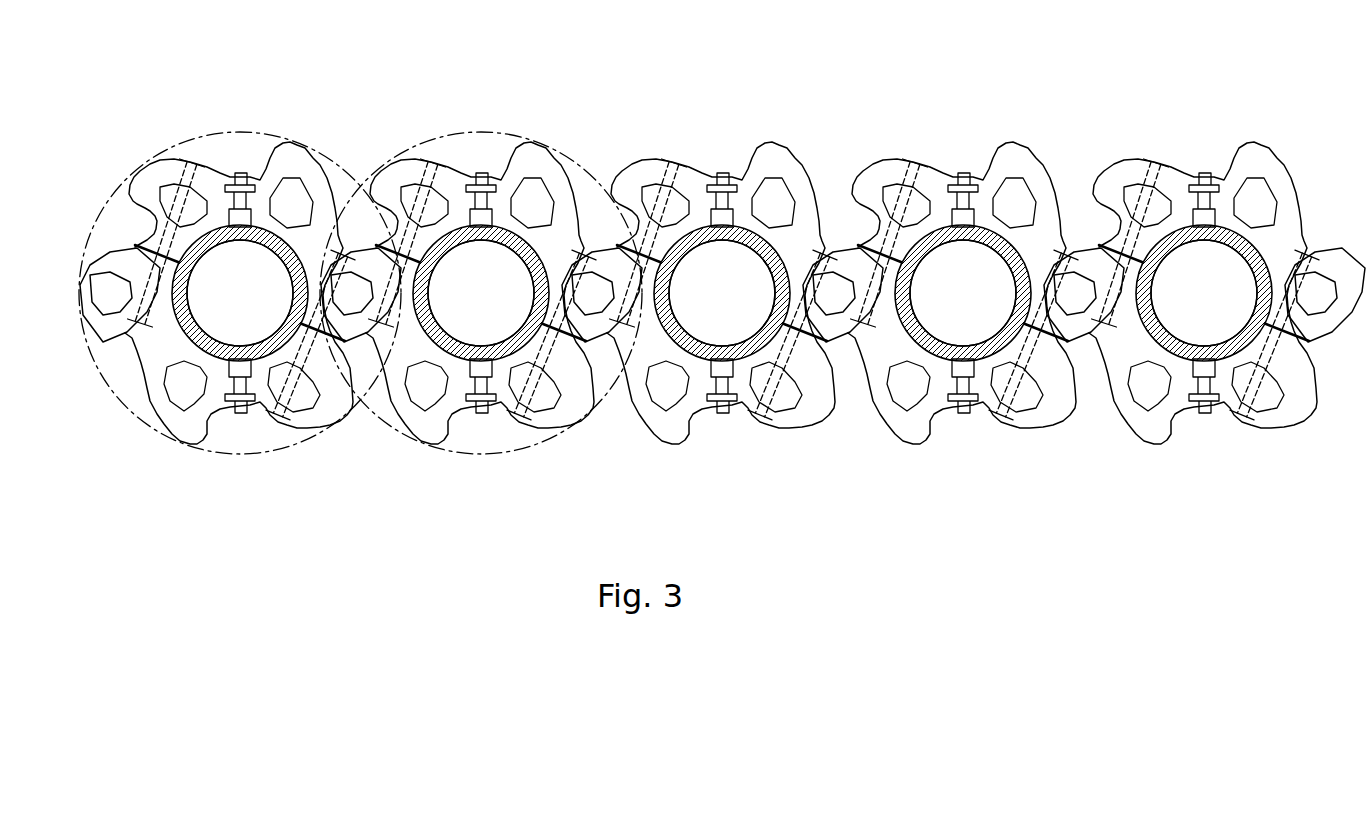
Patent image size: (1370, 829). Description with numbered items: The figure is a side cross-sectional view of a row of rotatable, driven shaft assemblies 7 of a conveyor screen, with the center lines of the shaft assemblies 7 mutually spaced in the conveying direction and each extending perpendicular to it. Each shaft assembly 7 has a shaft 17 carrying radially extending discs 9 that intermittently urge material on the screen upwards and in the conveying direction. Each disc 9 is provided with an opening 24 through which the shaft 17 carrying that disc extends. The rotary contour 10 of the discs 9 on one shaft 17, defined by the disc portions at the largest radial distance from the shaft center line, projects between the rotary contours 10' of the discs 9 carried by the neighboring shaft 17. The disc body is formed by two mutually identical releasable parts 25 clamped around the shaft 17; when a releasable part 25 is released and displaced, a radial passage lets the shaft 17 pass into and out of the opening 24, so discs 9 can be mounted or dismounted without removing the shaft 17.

The shaft assembly 7 is at (722, 267).
The disc 9 is at (1291, 177).
The rotary contour 10 is at (240, 265).
The rotary contour of neighboring disc 10' is at (481, 265).
The shaft 17 is at (1170, 352).
The opening 24 is at (523, 337).
The releasable part 25 is at (578, 405).